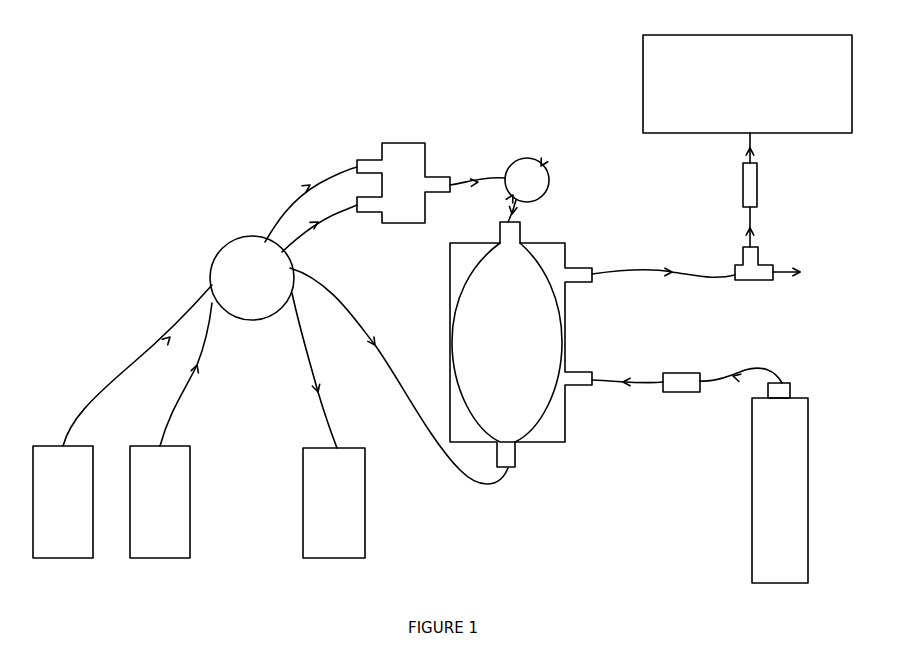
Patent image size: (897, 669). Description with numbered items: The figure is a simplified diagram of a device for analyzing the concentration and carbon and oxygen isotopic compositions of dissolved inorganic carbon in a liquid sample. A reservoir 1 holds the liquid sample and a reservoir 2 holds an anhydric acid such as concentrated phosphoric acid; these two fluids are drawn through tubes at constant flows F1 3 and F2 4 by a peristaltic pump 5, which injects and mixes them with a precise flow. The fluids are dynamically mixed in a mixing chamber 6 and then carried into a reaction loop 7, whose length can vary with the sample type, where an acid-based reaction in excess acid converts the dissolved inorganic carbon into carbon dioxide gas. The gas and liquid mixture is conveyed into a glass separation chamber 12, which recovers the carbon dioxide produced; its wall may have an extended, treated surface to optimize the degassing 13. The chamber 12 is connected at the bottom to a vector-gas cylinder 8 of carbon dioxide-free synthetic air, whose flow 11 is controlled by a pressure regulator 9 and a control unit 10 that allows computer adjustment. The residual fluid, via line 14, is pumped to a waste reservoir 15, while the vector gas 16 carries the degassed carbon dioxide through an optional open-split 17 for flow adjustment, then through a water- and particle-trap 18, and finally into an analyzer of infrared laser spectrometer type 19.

The reservoir 1 is at (63, 502).
The reservoir 2 is at (160, 502).
The flow F1 3 is at (210, 300).
The flow F2 4 is at (258, 325).
The peristaltic pump 5 is at (252, 278).
The mixing chamber 6 is at (403, 183).
The reaction loop 7 is at (499, 179).
The vector-gas cylinder 8 is at (780, 490).
The pressure regulator 9 is at (793, 386).
The control unit 10 is at (681, 398).
The flow 11 is at (687, 363).
The separation chamber 12 is at (521, 344).
The degassing 13 is at (507, 342).
The return line 14 is at (399, 376).
The waste reservoir 15 is at (334, 503).
The vector gas 16 is at (663, 286).
The open-split 17 is at (771, 277).
The water- and particle-trap 18 is at (774, 190).
The analyzer of infrared laser spectrometer type 19 is at (747, 84).